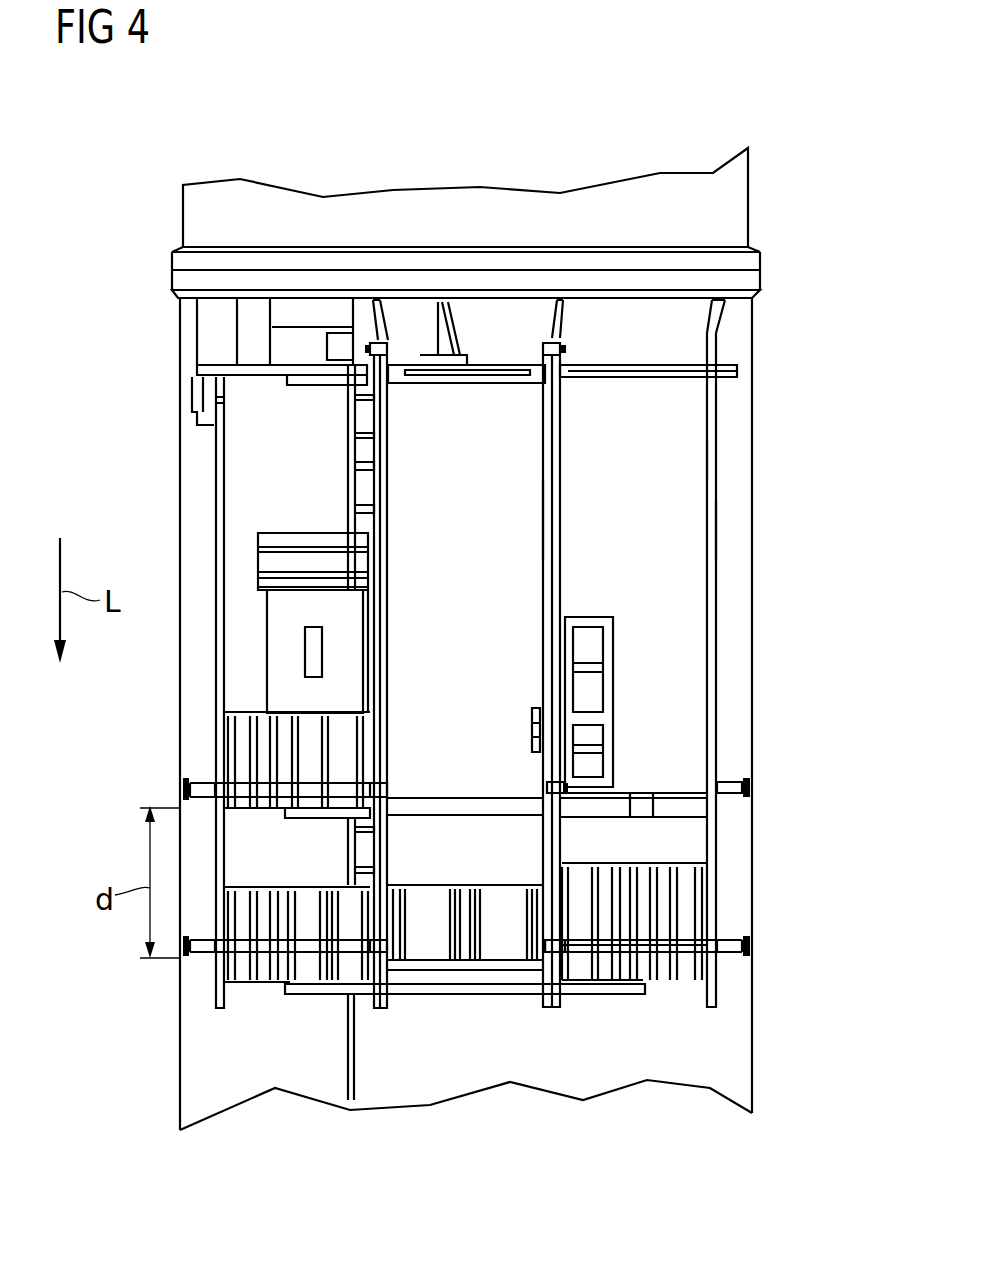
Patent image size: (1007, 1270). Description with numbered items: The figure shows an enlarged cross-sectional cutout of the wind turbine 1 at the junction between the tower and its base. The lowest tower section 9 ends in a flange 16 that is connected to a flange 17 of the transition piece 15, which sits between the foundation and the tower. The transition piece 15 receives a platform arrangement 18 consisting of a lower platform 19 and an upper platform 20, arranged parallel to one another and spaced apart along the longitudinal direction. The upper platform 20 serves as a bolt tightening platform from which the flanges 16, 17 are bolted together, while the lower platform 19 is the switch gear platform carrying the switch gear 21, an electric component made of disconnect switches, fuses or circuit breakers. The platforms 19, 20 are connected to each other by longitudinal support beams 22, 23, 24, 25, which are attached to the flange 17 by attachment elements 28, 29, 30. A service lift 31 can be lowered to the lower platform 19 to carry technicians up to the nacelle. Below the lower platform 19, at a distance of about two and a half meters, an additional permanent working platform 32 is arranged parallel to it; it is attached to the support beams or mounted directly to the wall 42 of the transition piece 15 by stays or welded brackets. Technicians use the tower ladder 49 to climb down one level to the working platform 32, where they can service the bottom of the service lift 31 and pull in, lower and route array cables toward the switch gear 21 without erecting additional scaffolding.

The wind turbine 1 is at (420, 110).
The lowest tower section 9 is at (750, 185).
The transition piece 15 is at (752, 657).
The flange 16 is at (760, 258).
The flange 17 is at (762, 282).
The platform arrangement 18 is at (717, 462).
The lower platform 19 is at (695, 808).
The upper platform 20 is at (672, 370).
The switch gear 21 is at (613, 638).
The support beam 22 is at (717, 525).
The support beam 23 is at (560, 515).
The support beam 24 is at (377, 433).
The support beam 25 is at (215, 462).
The attachment element 28 is at (718, 297).
The attachment element 29 is at (556, 300).
The attachment element 30 is at (382, 303).
The service lift 31 is at (267, 660).
The working platform 32 is at (608, 987).
The wall 42 is at (180, 1017).
The tower ladder 49 is at (345, 498).